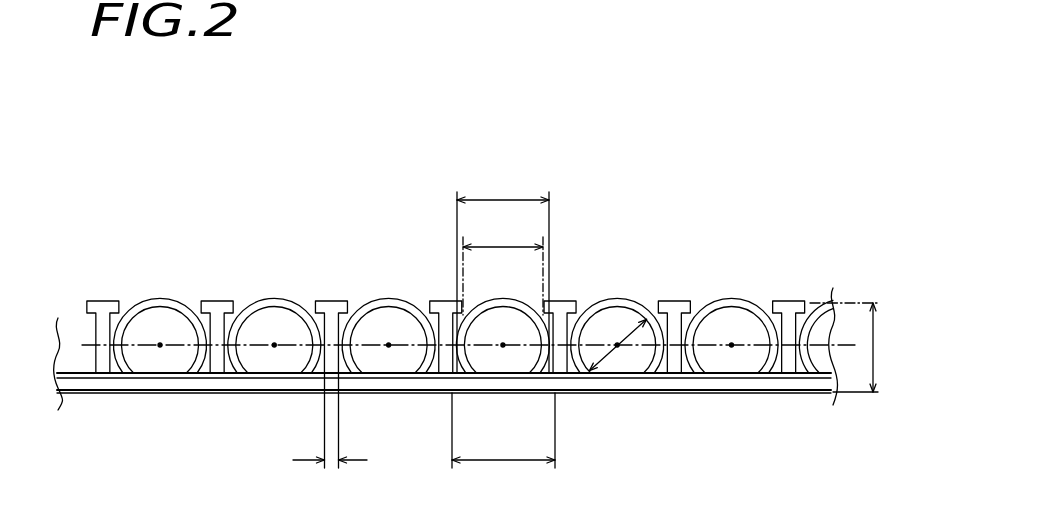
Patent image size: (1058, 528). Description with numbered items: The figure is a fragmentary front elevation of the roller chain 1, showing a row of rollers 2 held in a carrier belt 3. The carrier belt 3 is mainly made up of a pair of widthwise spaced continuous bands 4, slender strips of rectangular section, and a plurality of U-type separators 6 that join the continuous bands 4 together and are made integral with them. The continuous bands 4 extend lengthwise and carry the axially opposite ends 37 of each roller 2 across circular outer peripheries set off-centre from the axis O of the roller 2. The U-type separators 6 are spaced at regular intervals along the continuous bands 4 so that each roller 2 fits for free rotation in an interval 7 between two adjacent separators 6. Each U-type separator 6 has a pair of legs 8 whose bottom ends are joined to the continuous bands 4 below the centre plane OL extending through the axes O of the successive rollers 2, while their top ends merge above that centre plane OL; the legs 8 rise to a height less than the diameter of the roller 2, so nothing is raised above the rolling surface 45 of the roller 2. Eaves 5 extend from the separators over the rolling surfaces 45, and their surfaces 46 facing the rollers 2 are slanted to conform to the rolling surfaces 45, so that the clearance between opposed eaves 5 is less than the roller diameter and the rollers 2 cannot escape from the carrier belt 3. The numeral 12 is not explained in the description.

The roller chain 1 is at (692, 253).
The roller 2 is at (287, 327).
The carrier belt 3 is at (160, 395).
The continuous band 4 is at (606, 387).
The eave 5 is at (319, 301).
The U-type separator 6 is at (445, 303).
The interval 7 is at (240, 305).
The leg 8 is at (217, 373).
The gap between pin and tube 12 is at (228, 340).
The axially opposite ends of the roller 37 is at (402, 360).
The rolling surface 45 is at (268, 298).
The slant surface 46 is at (702, 310).
The axis of the roller O is at (159, 344).
The centre plane OL is at (178, 343).